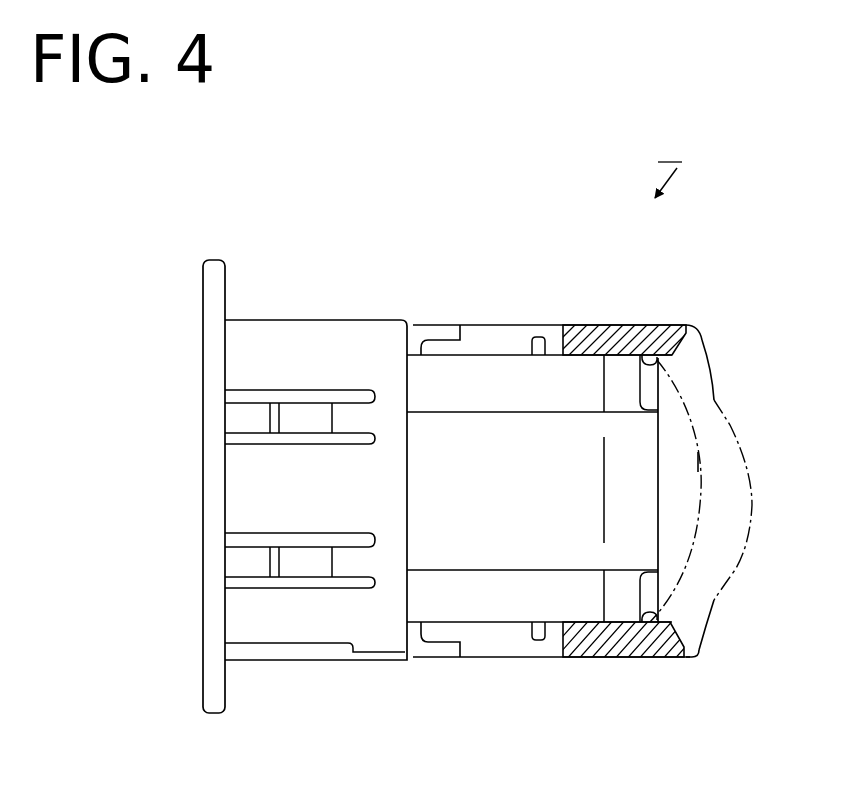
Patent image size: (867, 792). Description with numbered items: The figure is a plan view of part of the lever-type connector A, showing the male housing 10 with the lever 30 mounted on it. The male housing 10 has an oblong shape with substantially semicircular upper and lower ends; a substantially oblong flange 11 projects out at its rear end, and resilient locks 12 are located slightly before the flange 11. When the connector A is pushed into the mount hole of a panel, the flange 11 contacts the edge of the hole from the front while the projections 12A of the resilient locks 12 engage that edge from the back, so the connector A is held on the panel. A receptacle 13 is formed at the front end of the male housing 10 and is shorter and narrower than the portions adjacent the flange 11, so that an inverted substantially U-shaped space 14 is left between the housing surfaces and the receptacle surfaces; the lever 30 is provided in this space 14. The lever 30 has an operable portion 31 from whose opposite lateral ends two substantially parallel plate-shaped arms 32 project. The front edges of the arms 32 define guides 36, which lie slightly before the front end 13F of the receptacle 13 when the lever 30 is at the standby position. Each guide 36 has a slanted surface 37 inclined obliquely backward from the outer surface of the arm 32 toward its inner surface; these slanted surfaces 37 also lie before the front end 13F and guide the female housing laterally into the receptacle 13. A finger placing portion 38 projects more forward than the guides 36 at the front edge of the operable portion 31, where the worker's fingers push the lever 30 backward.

The male housing 10 is at (323, 335).
The flange 11 is at (222, 268).
The resilient locks 12 is at (355, 410).
The projections 12A is at (287, 412).
The receptacle 13 is at (503, 435).
The front end of the receptacle 13F is at (662, 520).
The space 14 is at (416, 333).
The lever 30 is at (647, 296).
The operable portion 31 is at (700, 456).
The arms 32 is at (597, 330).
The guides 36 is at (693, 328).
The slanted surface 37 is at (712, 378).
The finger placing portion 38 is at (753, 495).
The lever-type connector A is at (668, 167).